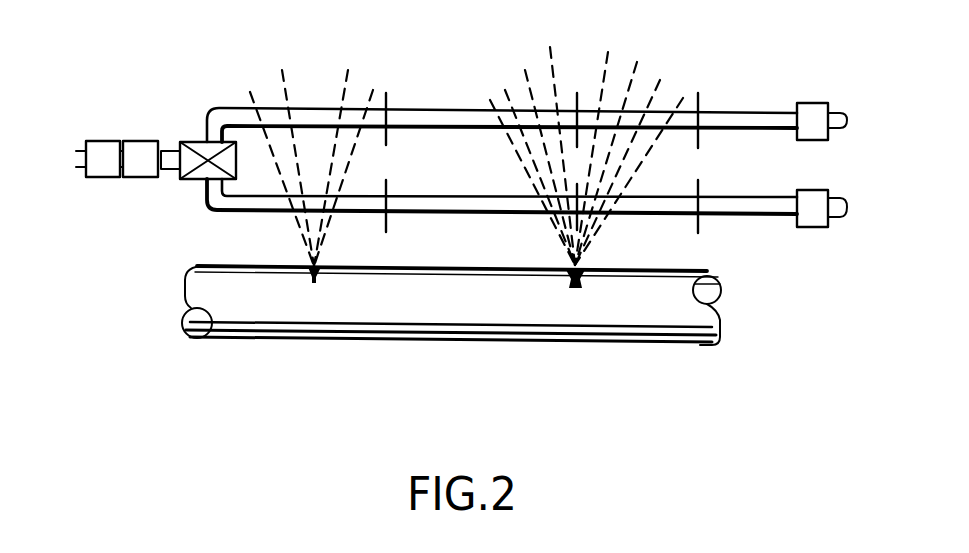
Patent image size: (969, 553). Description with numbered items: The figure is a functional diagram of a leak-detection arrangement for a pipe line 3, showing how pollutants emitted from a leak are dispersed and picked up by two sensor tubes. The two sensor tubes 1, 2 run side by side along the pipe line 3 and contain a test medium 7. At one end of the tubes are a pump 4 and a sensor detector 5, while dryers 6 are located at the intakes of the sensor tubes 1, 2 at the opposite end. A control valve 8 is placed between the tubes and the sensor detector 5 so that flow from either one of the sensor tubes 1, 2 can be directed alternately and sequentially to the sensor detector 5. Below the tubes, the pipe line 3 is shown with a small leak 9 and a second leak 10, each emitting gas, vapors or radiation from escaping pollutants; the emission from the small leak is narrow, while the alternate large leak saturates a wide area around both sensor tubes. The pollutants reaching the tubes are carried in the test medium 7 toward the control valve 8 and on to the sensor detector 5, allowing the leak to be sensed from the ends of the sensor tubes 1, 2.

The sensor tube 1 is at (412, 92).
The sensor tube 2 is at (463, 175).
The pipe line 3 is at (130, 337).
The pump 4 is at (95, 140).
The sensor detector 5 is at (140, 140).
The dryers 6 is at (812, 103).
The test medium 7 is at (787, 325).
The control valve 8 is at (237, 162).
The small leak 9 is at (311, 236).
The leak 10 is at (598, 338).